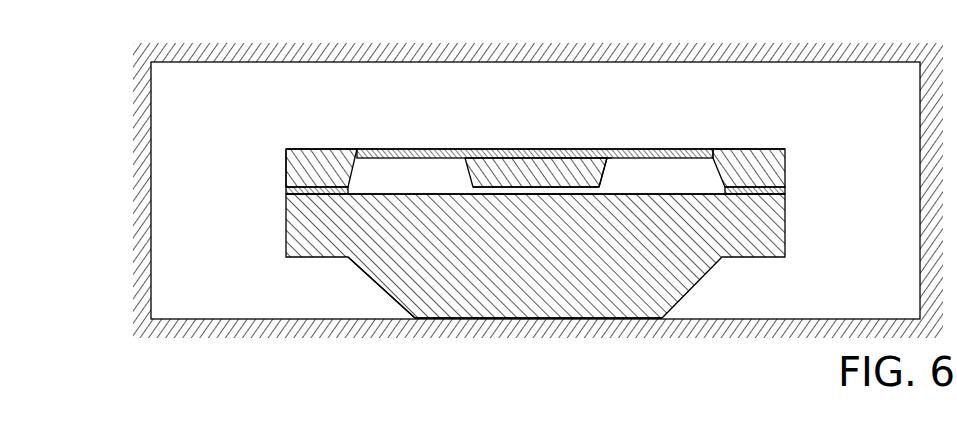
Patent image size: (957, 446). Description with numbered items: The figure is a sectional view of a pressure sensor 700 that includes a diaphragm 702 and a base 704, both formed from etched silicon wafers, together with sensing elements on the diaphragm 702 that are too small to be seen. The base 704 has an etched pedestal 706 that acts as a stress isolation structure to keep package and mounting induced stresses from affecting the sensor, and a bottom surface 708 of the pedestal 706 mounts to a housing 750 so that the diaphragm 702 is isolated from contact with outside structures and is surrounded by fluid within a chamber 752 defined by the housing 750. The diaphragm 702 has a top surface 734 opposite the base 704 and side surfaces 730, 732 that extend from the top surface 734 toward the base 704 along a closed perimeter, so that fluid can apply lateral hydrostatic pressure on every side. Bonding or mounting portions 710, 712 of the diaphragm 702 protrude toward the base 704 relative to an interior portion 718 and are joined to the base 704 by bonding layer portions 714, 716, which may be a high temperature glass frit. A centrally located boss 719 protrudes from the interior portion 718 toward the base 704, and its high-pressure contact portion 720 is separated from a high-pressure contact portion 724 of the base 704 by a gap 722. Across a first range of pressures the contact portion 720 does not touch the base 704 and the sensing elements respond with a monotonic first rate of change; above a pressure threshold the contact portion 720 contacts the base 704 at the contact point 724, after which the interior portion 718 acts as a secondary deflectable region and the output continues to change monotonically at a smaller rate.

The pressure sensor 700 is at (541, 235).
The diaphragm 702 is at (286, 177).
The base 704 is at (286, 252).
The pedestal 706 is at (380, 288).
The bottom surface 708 is at (455, 318).
The bonding portion 710 is at (259, 155).
The bonding portion 712 is at (813, 134).
The bonding layer portion 714 is at (286, 192).
The bonding layer portion 716 is at (785, 188).
The interior portion 718 is at (410, 150).
The boss 719 is at (482, 170).
The high-pressure contact portion 720 is at (527, 132).
The gap 722 is at (588, 190).
The high-pressure contact portion 724 is at (538, 196).
The side surface 730 is at (292, 174).
The side surface 732 is at (786, 172).
The top surface 734 is at (605, 152).
The housing 750 is at (142, 332).
The chamber 752 is at (167, 280).